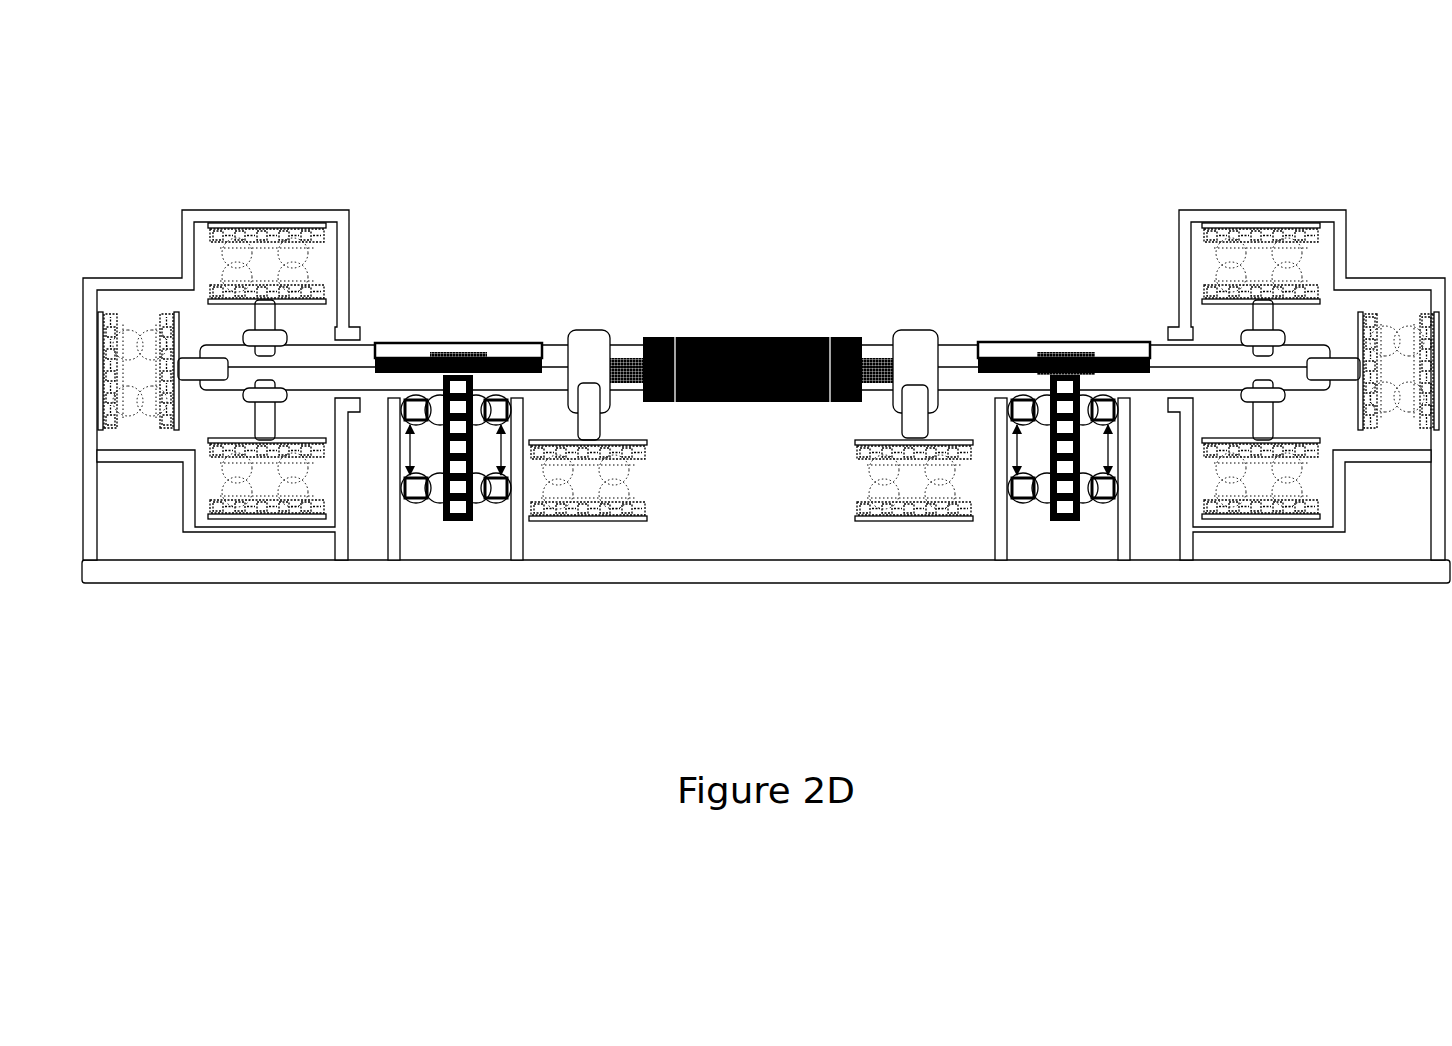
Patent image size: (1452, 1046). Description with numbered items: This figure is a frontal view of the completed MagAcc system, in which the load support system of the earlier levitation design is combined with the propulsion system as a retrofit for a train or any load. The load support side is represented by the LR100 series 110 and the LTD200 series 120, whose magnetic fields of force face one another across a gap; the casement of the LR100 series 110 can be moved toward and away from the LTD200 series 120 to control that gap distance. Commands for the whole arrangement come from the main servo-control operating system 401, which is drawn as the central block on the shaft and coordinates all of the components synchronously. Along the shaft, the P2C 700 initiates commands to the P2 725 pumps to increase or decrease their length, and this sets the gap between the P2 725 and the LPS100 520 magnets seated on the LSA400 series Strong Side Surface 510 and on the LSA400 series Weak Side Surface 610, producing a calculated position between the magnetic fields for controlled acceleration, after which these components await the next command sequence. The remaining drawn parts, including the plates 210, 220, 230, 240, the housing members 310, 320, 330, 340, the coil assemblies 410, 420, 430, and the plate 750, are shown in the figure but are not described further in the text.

The LR100 series 110 is at (656, 461).
The LTD200 series 120 is at (597, 566).
The first stator plate 210 is at (105, 440).
The second stator plate 220 is at (172, 440).
The third stator plate 230 is at (1365, 440).
The fourth stator plate 240 is at (1428, 440).
The shaft coupling block 310 is at (301, 461).
The lower housing frame 320 is at (253, 537).
The upper housing bracket 330 is at (331, 219).
The coil stem 340 is at (323, 284).
The JURLYN Main-1 401 is at (743, 333).
The horizontal coil assembly 410 is at (653, 501).
The vertical coil assembly 420 is at (135, 320).
The outer coil assembly 430 is at (258, 268).
The LSA400 series Strong Side Surface 510 is at (440, 521).
The LPS100 520 is at (759, 450).
The LSA400 series Weak Side Surface 610 is at (476, 521).
The P2C 700 is at (622, 355).
The P2 725 is at (420, 347).
The flywheel plate 750 is at (525, 338).